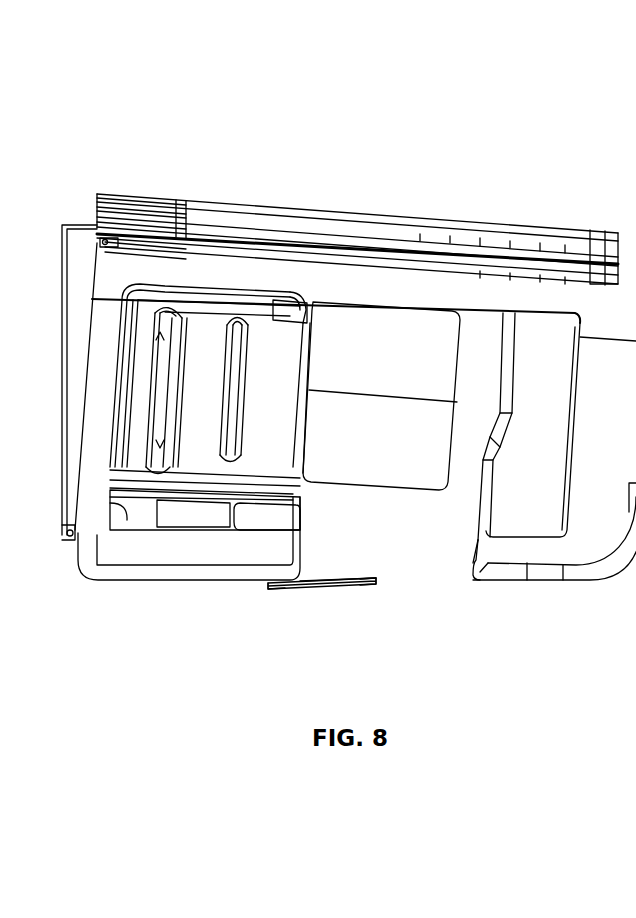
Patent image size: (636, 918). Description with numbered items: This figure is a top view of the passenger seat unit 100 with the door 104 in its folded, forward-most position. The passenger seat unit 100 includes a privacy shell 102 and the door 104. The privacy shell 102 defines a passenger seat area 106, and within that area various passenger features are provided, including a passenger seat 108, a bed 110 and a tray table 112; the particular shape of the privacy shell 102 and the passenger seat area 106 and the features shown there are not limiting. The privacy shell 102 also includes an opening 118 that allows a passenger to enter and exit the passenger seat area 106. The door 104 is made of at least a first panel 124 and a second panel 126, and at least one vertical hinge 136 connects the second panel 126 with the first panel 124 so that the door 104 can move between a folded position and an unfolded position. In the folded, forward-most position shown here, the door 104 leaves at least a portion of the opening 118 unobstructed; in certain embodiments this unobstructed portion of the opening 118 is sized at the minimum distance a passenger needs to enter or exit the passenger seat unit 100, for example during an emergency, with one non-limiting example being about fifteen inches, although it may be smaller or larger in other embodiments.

The passenger seat unit 100 is at (210, 130).
The privacy shell 102 is at (527, 567).
The door 104 is at (318, 585).
The passenger seat area 106 is at (481, 310).
The passenger seat 108 is at (276, 350).
The bed 110 is at (541, 330).
The tray table 112 is at (373, 320).
The opening 118 is at (437, 572).
The first panel 124 is at (341, 573).
The second panel 126 is at (289, 584).
The vertical hinge 136 is at (377, 581).